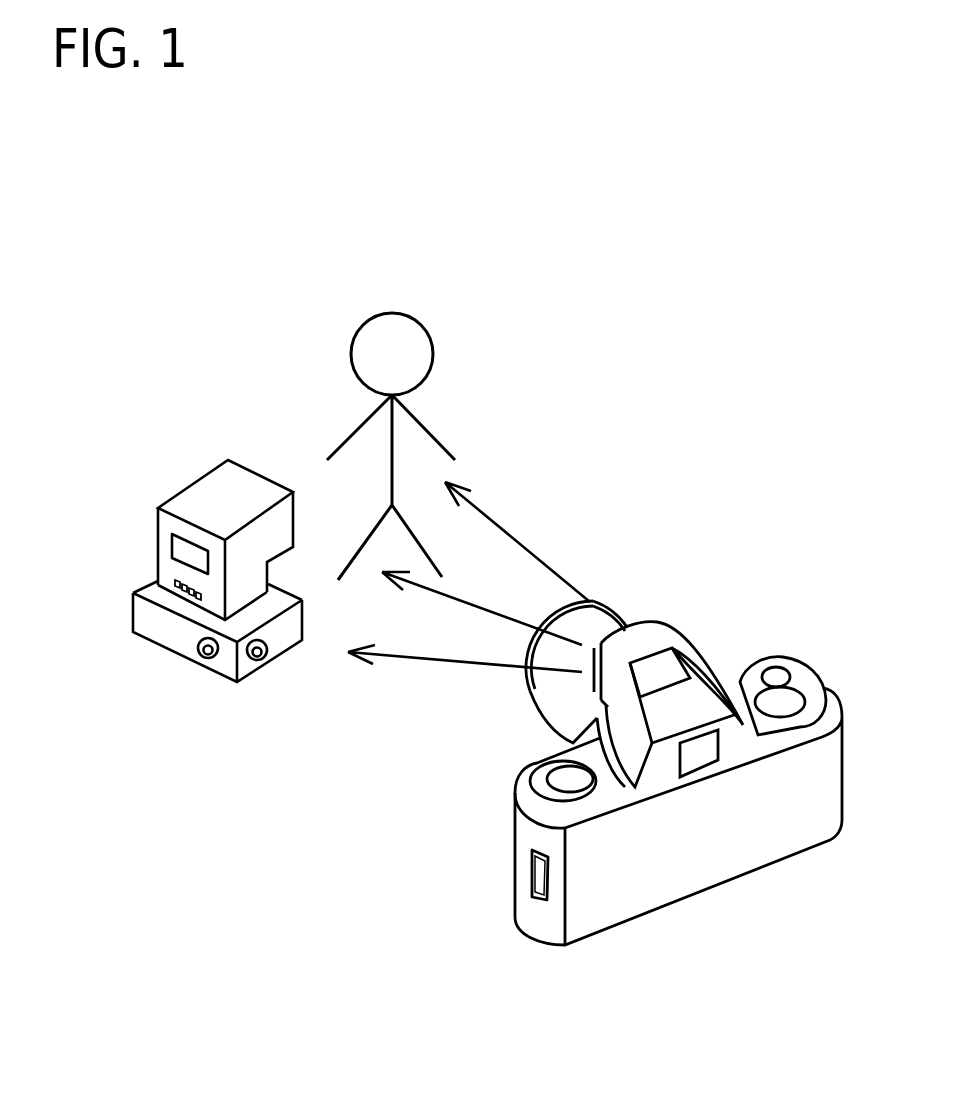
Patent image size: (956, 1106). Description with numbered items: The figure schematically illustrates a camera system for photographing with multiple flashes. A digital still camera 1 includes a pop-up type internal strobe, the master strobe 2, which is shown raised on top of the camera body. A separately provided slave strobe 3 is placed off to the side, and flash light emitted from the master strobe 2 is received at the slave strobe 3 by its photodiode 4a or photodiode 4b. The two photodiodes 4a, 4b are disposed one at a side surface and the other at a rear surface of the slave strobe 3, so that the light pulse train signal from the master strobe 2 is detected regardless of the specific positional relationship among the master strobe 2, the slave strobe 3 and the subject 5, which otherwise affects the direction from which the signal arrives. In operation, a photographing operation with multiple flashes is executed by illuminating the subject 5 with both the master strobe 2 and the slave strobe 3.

The digital still camera 1 is at (678, 767).
The master strobe 2 is at (668, 640).
The slave strobe 3 is at (225, 583).
The photodiode 4a is at (209, 659).
The photodiode 4b is at (257, 661).
The subject 5 is at (427, 330).